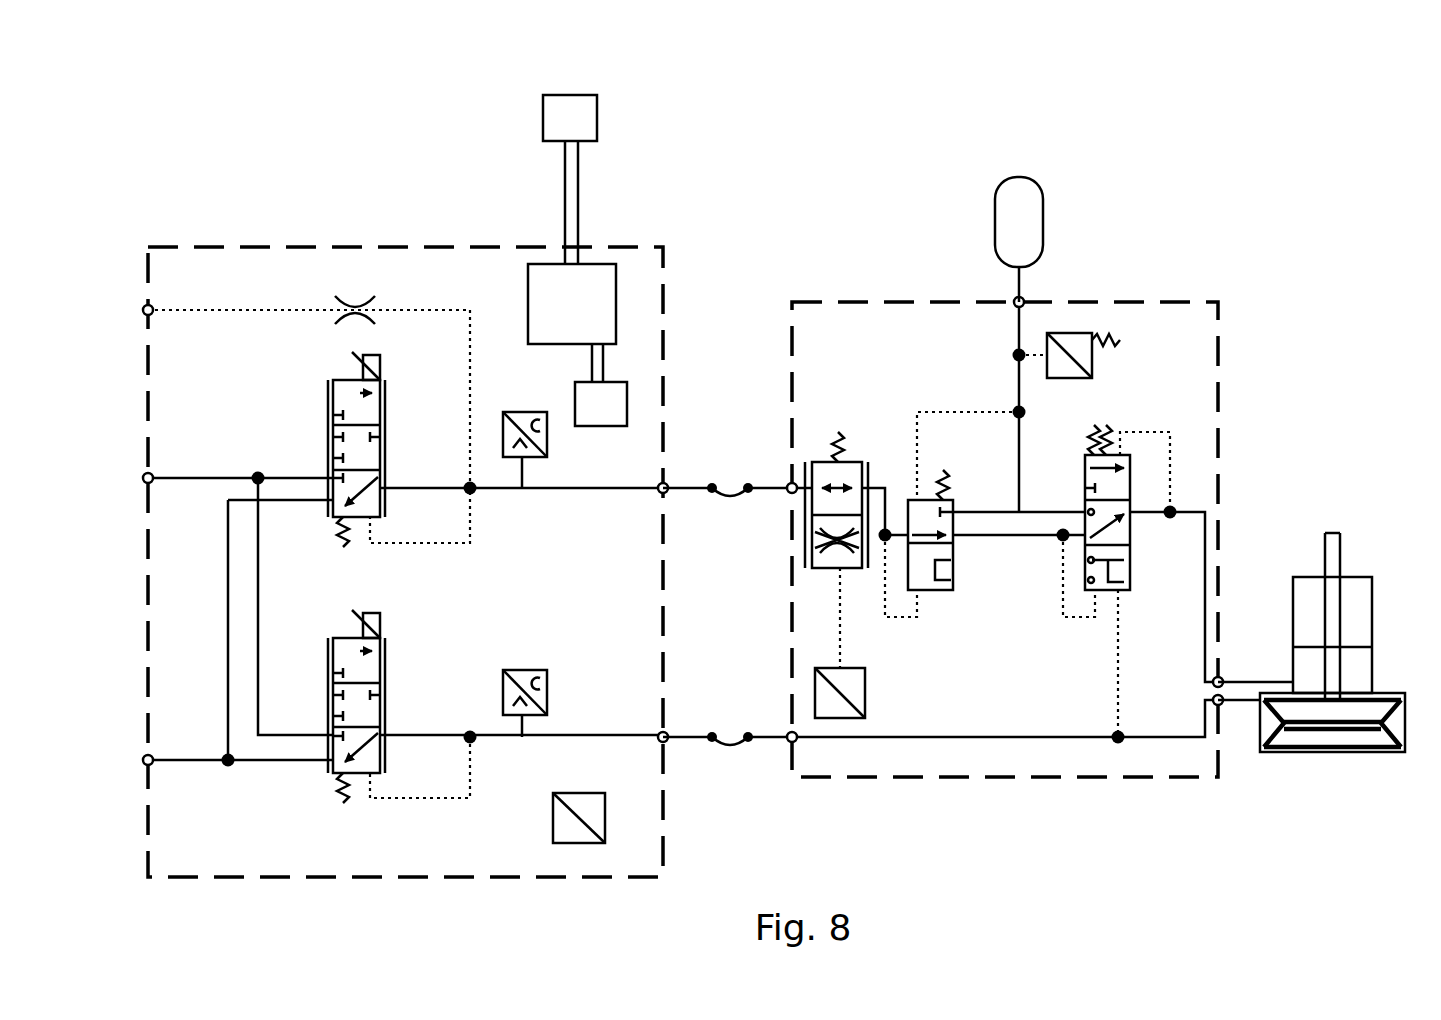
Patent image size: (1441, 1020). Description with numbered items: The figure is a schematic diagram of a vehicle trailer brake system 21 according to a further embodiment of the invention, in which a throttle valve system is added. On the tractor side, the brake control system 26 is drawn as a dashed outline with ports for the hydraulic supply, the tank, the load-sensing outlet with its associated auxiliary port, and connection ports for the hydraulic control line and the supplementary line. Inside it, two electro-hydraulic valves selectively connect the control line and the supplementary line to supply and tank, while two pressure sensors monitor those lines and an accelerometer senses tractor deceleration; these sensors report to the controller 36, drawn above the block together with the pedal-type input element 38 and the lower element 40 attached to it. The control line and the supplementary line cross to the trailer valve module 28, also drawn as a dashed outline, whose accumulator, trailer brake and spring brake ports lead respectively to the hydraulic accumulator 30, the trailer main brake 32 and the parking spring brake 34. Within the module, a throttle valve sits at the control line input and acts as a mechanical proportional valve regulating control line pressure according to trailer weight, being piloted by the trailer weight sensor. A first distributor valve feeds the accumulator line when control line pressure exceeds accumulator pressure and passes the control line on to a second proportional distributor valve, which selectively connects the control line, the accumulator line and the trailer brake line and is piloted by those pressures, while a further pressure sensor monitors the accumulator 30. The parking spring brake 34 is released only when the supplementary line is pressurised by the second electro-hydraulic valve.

The vehicle trailer brake system 21 is at (276, 124).
The brake control system 26 is at (283, 247).
The trailer valve module 28 is at (915, 302).
The hydraulic accumulator 30 is at (1013, 177).
The trailer main brake 32 is at (1353, 577).
The parking spring brake 34 is at (1295, 752).
The controller 36 is at (543, 265).
The brake pedal 38 is at (565, 100).
The pedal sensor 40 is at (613, 397).